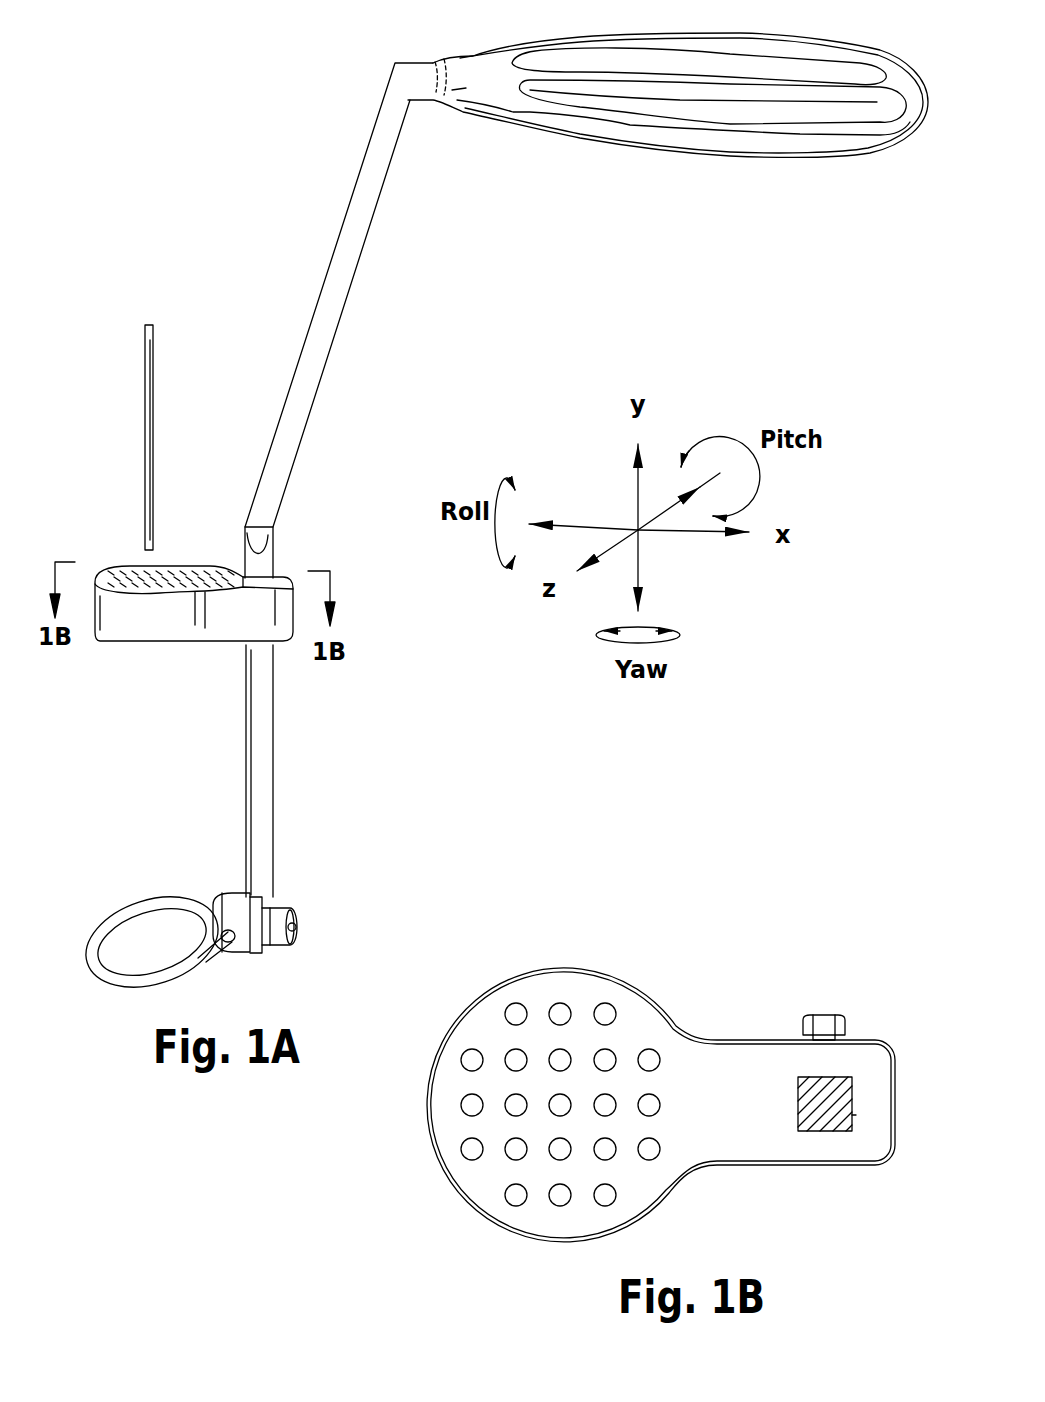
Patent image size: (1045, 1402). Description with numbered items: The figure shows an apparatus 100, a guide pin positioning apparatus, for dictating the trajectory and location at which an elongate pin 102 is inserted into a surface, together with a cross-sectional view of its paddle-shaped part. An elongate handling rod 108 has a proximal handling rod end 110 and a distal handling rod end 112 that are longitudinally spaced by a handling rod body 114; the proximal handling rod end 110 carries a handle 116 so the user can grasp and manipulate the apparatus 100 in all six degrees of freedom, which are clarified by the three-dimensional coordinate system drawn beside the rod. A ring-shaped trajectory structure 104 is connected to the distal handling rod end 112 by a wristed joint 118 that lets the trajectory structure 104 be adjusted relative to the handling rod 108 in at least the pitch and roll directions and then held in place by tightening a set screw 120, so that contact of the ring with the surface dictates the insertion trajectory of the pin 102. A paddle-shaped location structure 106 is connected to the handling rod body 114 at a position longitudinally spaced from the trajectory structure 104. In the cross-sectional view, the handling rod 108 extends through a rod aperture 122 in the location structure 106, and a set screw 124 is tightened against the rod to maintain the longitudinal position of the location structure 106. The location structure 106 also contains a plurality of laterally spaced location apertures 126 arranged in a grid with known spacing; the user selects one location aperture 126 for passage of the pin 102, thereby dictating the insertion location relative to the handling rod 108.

In FIG. 1A, the apparatus 100 is at (449, 321).
In FIG. 1A, the elongate pin 102 is at (150, 446).
In FIG. 1A, the trajectory structure 104 is at (204, 990).
In FIG. 1A, the location structure 106 is at (311, 668).
In FIG. 1B, the location structure 106 is at (478, 1224).
In FIG. 1A, the handling rod 108 is at (351, 487).
In FIG. 1B, the handling rod 108 is at (828, 1108).
In FIG. 1A, the proximal handling rod end 110 is at (422, 131).
In FIG. 1A, the distal handling rod end 112 is at (293, 874).
In FIG. 1A, the handling rod body 114 is at (318, 392).
In FIG. 1A, the handle 116 is at (685, 155).
In FIG. 1A, the wristed joint 118 is at (232, 878).
In FIG. 1A, the set screw 120 is at (297, 940).
In FIG. 1B, the rod aperture 122 is at (852, 1117).
In FIG. 1B, the set screw 124 is at (825, 1022).
In FIG. 1B, the location apertures 126 is at (600, 1004).